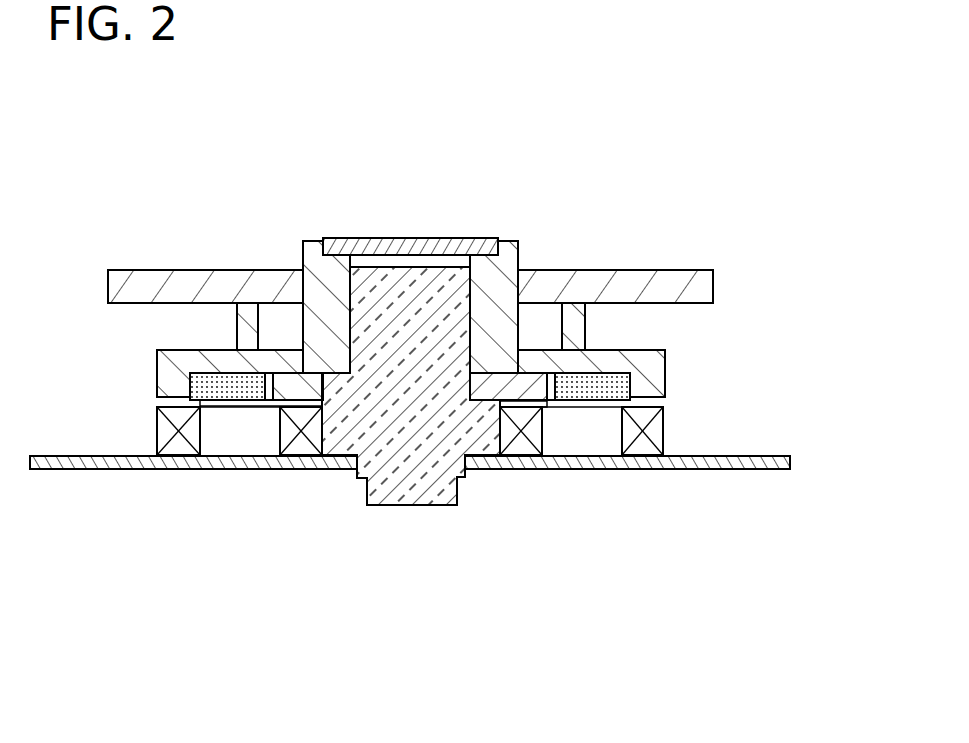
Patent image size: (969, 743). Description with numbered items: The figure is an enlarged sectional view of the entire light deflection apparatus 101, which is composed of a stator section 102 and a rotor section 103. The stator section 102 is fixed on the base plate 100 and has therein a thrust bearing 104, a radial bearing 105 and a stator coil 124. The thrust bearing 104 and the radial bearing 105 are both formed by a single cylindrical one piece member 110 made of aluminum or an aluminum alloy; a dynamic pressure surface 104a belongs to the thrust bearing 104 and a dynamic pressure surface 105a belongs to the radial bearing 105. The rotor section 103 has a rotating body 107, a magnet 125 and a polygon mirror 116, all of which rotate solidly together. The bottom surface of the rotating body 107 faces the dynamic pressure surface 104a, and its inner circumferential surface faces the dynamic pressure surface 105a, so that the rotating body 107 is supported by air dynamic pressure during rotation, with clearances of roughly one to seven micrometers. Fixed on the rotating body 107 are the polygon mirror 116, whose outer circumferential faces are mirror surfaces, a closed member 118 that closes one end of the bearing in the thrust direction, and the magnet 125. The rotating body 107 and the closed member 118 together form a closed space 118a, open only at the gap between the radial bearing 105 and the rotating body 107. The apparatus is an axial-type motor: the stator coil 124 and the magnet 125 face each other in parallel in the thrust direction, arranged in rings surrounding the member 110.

The base plate 100 is at (737, 465).
The light deflection apparatus 101 is at (370, 155).
The stator section 102 is at (802, 435).
The rotor section 103 is at (802, 252).
The thrust bearing 104 is at (510, 386).
The dynamic pressure surface 104a is at (348, 372).
The radial bearing 105 is at (350, 298).
The dynamic pressure surface 105a is at (467, 327).
The rotating body 107 is at (512, 241).
The one piece member 110 is at (430, 548).
The polygon mirror 116 is at (165, 284).
The closed member 118 is at (430, 238).
The space 118a is at (368, 238).
The stator coil 124 is at (300, 450).
The magnet 125 is at (613, 385).